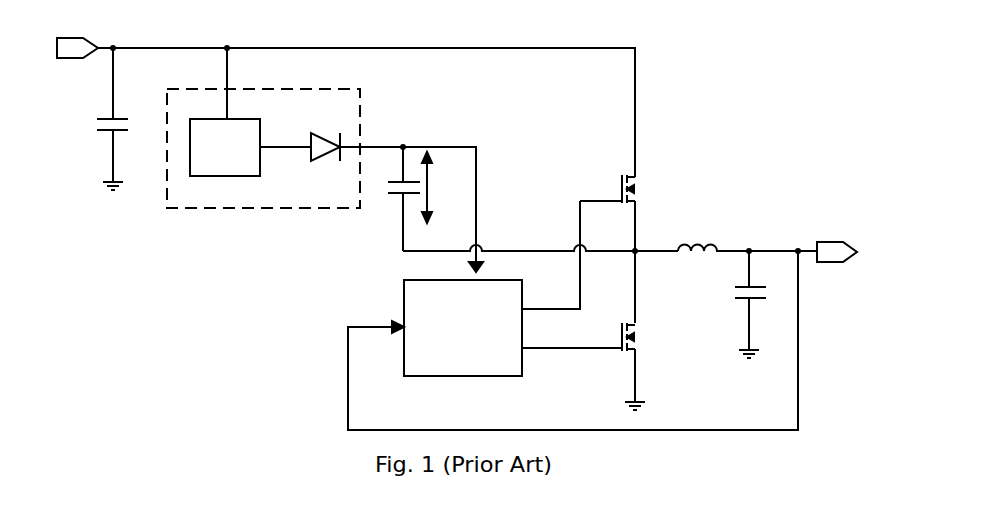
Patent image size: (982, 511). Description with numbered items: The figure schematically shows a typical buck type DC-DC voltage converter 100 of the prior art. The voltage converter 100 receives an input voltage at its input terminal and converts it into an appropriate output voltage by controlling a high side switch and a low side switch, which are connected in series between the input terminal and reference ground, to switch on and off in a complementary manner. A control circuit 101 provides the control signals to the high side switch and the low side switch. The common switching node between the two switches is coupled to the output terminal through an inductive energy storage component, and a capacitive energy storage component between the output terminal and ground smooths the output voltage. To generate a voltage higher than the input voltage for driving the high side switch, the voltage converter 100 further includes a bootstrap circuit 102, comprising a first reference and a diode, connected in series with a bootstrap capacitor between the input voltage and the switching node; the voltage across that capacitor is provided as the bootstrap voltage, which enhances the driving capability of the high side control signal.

The buck type DC-DC voltage converter 100 is at (738, 134).
The control circuit 101 is at (445, 377).
The bootstrap circuit 102 is at (303, 209).